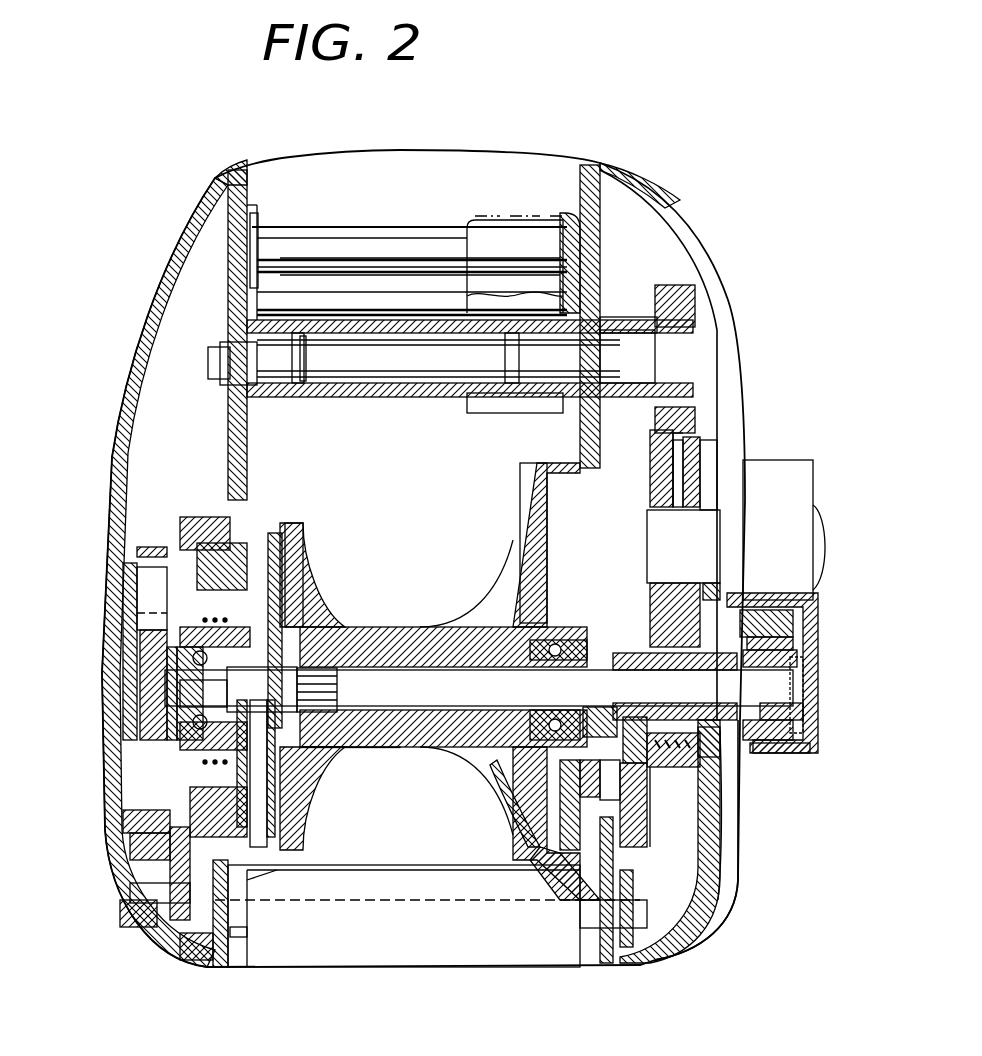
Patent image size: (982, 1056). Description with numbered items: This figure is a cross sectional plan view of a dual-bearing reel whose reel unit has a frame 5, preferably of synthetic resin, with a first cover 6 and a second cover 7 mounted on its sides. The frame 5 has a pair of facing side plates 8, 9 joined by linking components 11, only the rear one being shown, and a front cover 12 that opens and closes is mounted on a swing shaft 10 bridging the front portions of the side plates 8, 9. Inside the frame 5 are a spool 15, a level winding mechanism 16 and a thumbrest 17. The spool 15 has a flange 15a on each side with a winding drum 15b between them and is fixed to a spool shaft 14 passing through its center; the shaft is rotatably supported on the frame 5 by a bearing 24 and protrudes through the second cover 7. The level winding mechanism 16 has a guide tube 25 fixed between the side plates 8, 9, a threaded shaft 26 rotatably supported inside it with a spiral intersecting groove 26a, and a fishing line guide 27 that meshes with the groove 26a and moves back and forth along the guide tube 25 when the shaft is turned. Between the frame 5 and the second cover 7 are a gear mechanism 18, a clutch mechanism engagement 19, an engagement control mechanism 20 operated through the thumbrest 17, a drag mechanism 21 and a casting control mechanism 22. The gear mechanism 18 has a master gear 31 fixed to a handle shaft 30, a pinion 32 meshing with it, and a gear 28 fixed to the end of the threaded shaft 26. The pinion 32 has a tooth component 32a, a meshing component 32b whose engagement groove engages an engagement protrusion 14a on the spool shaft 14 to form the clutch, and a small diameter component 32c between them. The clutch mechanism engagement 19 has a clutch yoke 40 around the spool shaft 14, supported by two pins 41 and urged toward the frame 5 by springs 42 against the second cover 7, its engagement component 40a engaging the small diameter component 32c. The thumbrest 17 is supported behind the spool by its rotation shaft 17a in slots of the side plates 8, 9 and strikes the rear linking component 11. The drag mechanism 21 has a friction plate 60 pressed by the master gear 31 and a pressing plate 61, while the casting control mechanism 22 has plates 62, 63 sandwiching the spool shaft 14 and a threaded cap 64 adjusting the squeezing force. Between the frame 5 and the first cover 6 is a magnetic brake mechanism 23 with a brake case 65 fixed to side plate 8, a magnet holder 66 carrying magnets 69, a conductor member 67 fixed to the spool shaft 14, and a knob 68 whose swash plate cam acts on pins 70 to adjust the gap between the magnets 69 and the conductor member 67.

The frame 5 is at (195, 300).
The first cover 6 is at (162, 265).
The second cover 7 is at (695, 245).
The side plate 8 is at (210, 182).
The side plate 9 is at (590, 250).
The swing shaft 10 is at (327, 258).
The linking component 11 is at (258, 893).
The front cover 12 is at (300, 197).
The spool shaft 14 is at (343, 710).
The engagement protrusion 14a is at (570, 690).
The spool 15 is at (340, 633).
The flange 15a is at (287, 540).
The winding drum 15b is at (400, 750).
The level winding mechanism 16 is at (437, 408).
The thumbrest 17 is at (462, 950).
The rotation shaft 17a is at (237, 927).
The gear mechanism 18 is at (705, 422).
The clutch mechanism engagement 19 is at (725, 780).
The engagement control mechanism 20 is at (657, 870).
The drag mechanism 21 is at (710, 462).
The casting control mechanism 22 is at (822, 646).
The magnetic brake mechanism 23 is at (180, 530).
The spool bearing 24 is at (275, 302).
The guide tube 25 is at (362, 322).
The threaded shaft 26 is at (348, 365).
The spiral intersecting groove 26a is at (305, 400).
The fishing line guide 27 is at (478, 303).
The gear 28 is at (700, 310).
The handle shaft 30 is at (815, 528).
The master gear 31 is at (715, 362).
The pinion 32 is at (758, 755).
The tooth component 32a is at (730, 658).
The meshing component 32b is at (513, 817).
The small diameter component 32c is at (580, 607).
The clutch yoke 40 is at (737, 722).
The engagement component 40a is at (515, 775).
The pin 41 is at (677, 770).
The spring 42 is at (730, 840).
The friction plate 60 is at (708, 490).
The pressing plate 61 is at (702, 520).
The plate 62 is at (135, 765).
The plate 63 is at (800, 707).
The cap 64 is at (760, 752).
The brake case 65 is at (200, 527).
The magnet holder 66 is at (137, 553).
The conductor member 67 is at (287, 560).
The knob 68 is at (127, 680).
The magnet 69 is at (250, 550).
The pin 70 is at (172, 805).